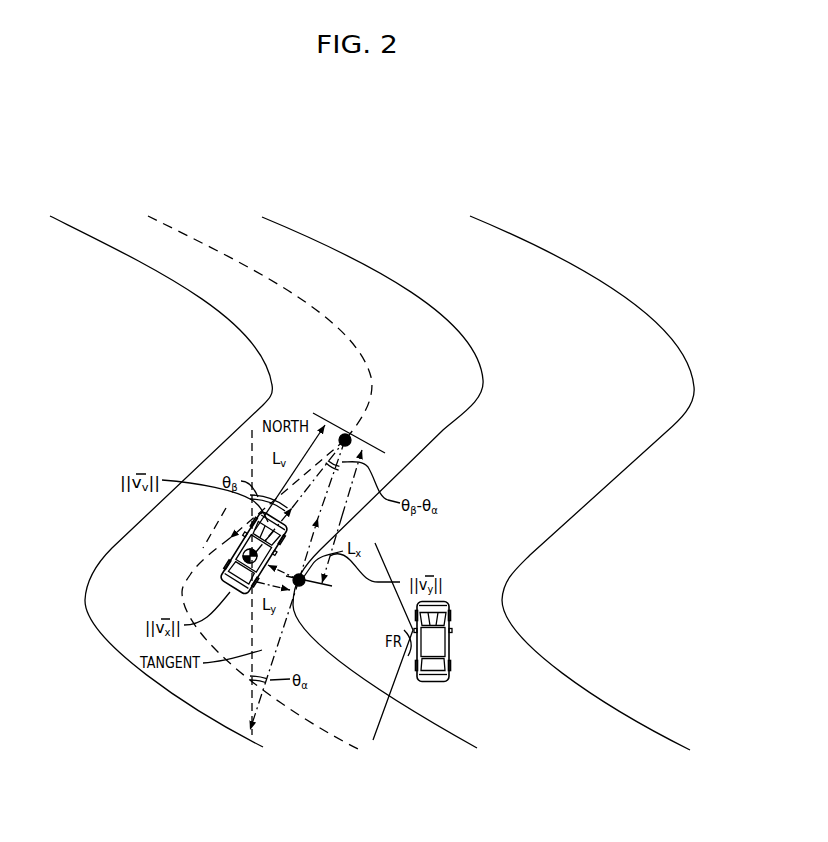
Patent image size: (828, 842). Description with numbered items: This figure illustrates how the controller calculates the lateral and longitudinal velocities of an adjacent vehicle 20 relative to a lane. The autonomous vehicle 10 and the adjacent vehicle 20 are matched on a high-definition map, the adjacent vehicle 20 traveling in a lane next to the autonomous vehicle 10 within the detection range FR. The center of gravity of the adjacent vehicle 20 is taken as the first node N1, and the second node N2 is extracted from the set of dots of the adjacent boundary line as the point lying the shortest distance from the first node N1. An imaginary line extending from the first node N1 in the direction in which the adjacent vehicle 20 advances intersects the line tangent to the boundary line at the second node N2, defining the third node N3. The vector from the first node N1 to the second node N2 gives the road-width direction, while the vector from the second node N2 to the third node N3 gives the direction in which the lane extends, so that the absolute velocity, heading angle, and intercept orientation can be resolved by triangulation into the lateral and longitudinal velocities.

The autonomous vehicle 10 is at (447, 650).
The adjacent vehicle 20 is at (207, 560).
The first node N1 is at (231, 567).
The second node N2 is at (310, 591).
The third node N3 is at (357, 436).